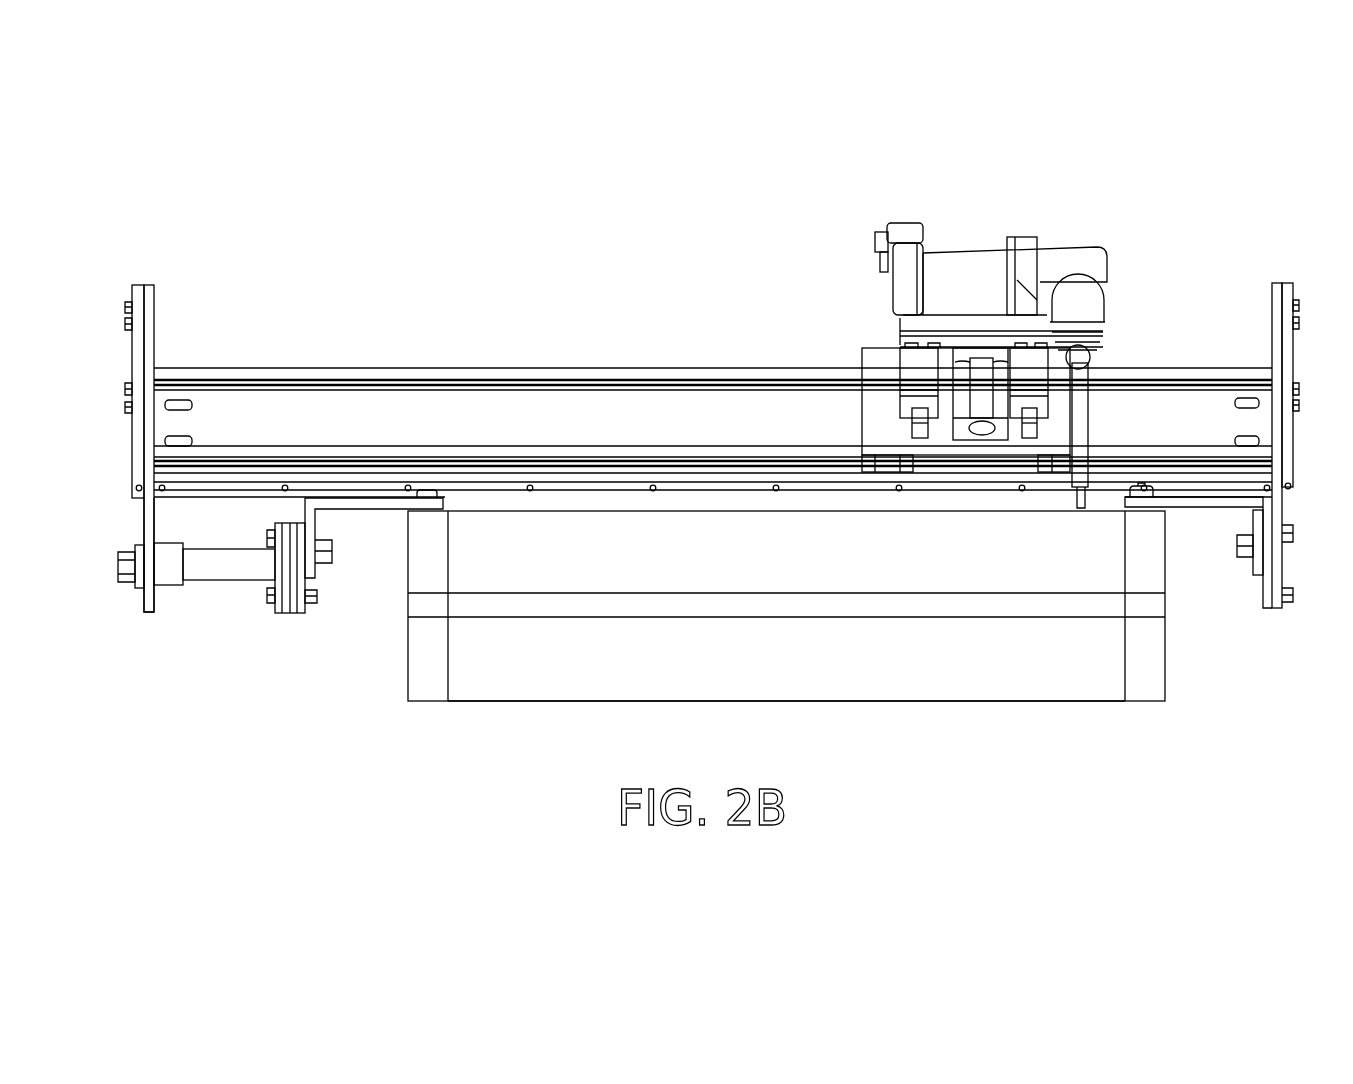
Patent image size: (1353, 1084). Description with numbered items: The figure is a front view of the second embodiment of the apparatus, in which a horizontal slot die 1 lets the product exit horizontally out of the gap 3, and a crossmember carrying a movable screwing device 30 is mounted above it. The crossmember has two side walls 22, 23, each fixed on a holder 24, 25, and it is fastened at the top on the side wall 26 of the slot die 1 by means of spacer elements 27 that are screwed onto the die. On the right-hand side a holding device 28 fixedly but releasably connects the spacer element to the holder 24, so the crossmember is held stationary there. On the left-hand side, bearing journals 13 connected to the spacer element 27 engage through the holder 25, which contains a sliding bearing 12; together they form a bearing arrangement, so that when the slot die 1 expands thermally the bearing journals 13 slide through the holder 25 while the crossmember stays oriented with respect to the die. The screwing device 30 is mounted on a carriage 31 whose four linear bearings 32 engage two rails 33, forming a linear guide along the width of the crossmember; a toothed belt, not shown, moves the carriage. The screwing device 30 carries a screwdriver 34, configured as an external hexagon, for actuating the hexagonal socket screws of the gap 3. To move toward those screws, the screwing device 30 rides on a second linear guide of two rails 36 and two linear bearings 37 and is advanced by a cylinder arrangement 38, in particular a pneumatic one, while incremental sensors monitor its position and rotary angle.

The slot die 1 is at (548, 700).
The gap 3 is at (1165, 660).
The sliding bearing 12 is at (178, 567).
The bearing journals 13 is at (225, 570).
The side wall 22 is at (1287, 465).
The side wall 23 is at (138, 340).
The holder 24 is at (350, 425).
The holder 25 is at (150, 513).
The side wall of the slot die 26 is at (433, 687).
The spacer elements 27 is at (375, 505).
The holding device 28 is at (1270, 570).
The screwing device 30 is at (1024, 248).
The carriage 31 is at (890, 360).
The linear bearings 32 is at (887, 465).
The rails 33 is at (455, 455).
The screwdriver 34 is at (1078, 417).
The rails 36 is at (922, 440).
The linear bearings 37 is at (900, 398).
The cylinder arrangement 38 is at (985, 370).